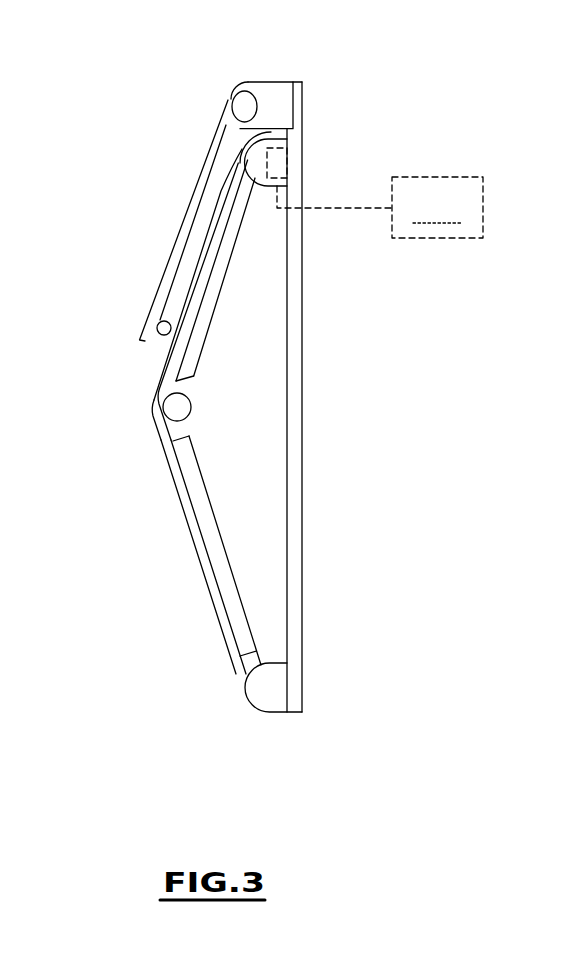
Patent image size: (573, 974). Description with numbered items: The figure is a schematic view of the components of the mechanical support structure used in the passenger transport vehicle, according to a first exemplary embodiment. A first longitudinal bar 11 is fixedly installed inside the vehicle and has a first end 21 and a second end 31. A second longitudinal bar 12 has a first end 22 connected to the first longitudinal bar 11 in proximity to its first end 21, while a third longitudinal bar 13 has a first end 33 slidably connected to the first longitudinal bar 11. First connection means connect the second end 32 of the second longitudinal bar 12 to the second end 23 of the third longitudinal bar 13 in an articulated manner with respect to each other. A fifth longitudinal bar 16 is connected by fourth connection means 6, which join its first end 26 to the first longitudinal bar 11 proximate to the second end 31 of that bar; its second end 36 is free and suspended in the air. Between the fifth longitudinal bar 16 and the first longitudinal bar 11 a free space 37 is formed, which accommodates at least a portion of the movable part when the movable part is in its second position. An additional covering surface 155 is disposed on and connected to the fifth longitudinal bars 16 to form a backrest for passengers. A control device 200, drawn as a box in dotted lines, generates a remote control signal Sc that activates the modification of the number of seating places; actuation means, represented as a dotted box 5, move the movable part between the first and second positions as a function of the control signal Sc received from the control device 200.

The actuation means 5 is at (282, 163).
The fourth connection means 6 is at (217, 70).
The first longitudinal bar 11 is at (303, 447).
The second longitudinal bar 12 is at (185, 583).
The third longitudinal bar 13 is at (189, 266).
The fifth longitudinal bar 16 is at (144, 229).
The first end of the first longitudinal bar 21 is at (303, 692).
The first end of the second longitudinal bar 22 is at (205, 677).
The second end of the third longitudinal bar 23 is at (166, 380).
The first end of the fifth longitudinal bar 26 is at (233, 140).
The second end of the first longitudinal bar 31 is at (303, 103).
The second end of the second longitudinal bar 32 is at (128, 435).
The first end of the third longitudinal bar 33 is at (226, 196).
The second end of the fifth longitudinal bar 36 is at (163, 335).
The free space 37 is at (234, 98).
The additional covering surface 155 is at (153, 203).
The control device 200 is at (437, 207).
The remote control signal Sc is at (333, 210).